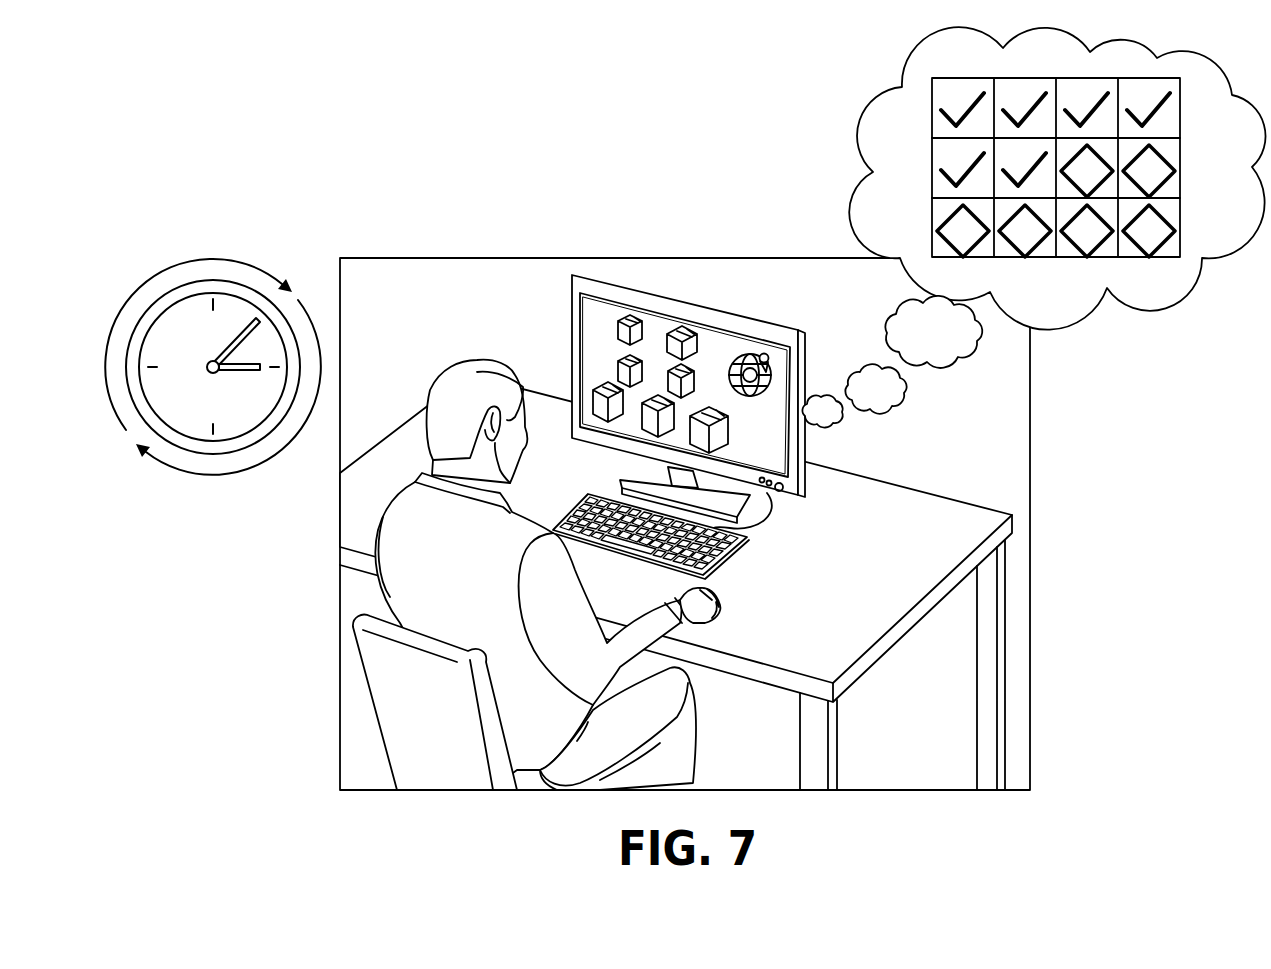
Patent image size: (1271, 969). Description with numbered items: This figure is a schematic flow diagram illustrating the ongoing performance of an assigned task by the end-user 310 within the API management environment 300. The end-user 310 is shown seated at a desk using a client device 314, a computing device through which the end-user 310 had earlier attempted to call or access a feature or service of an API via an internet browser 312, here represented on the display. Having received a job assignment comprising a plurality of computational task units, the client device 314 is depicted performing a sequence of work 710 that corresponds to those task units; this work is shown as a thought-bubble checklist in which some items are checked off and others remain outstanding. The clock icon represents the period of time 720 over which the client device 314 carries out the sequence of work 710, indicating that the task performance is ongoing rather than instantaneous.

The API management environment 300 is at (461, 143).
The end-user 310 is at (453, 383).
The internet browser 312 is at (699, 305).
The client device 314 is at (818, 528).
The sequence of work 710 is at (850, 140).
The period of time 720 is at (198, 222).